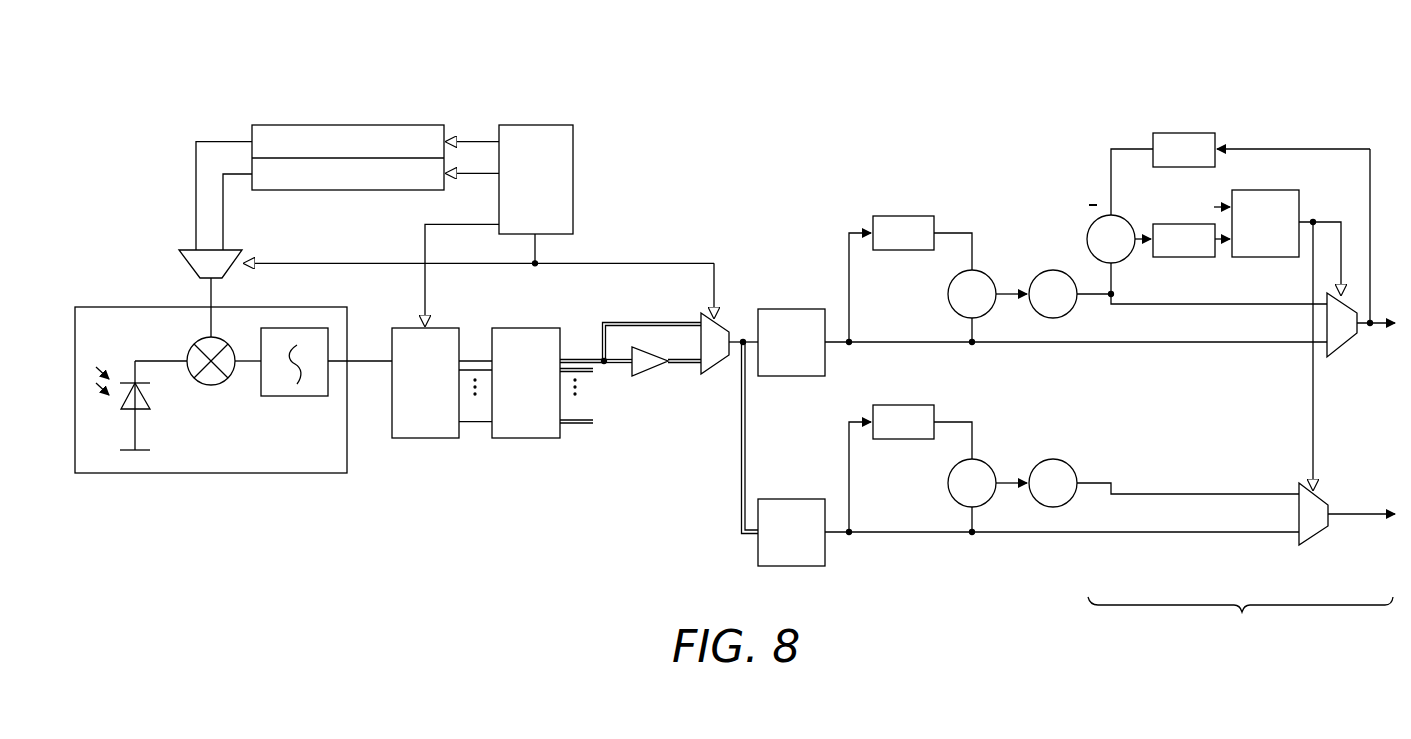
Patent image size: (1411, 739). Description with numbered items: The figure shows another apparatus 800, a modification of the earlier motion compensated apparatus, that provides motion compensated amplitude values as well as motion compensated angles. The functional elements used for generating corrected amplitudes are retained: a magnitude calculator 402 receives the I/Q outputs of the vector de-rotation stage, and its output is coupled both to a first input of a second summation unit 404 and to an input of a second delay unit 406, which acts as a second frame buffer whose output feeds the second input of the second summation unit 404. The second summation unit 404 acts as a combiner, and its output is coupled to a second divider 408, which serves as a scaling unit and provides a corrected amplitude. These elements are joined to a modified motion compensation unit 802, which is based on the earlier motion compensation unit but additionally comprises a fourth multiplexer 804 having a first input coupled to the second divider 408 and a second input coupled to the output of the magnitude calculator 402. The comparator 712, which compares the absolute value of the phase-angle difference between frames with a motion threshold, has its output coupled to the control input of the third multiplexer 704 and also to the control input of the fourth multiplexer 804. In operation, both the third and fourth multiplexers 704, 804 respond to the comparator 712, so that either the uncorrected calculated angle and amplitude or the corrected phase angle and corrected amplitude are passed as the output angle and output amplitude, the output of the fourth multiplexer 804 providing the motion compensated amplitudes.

The apparatus 800 is at (142, 126).
The comparator 712 is at (1286, 340).
The third multiplexer 704 is at (1345, 348).
The magnitude calculator 402 is at (1028, 532).
The second summation unit 404 is at (948, 483).
The second delay unit 406 is at (910, 468).
The second divider 408 is at (1053, 459).
The fourth multiplexer 804 is at (1316, 535).
The modified motion compensation unit 802 is at (1240, 620).